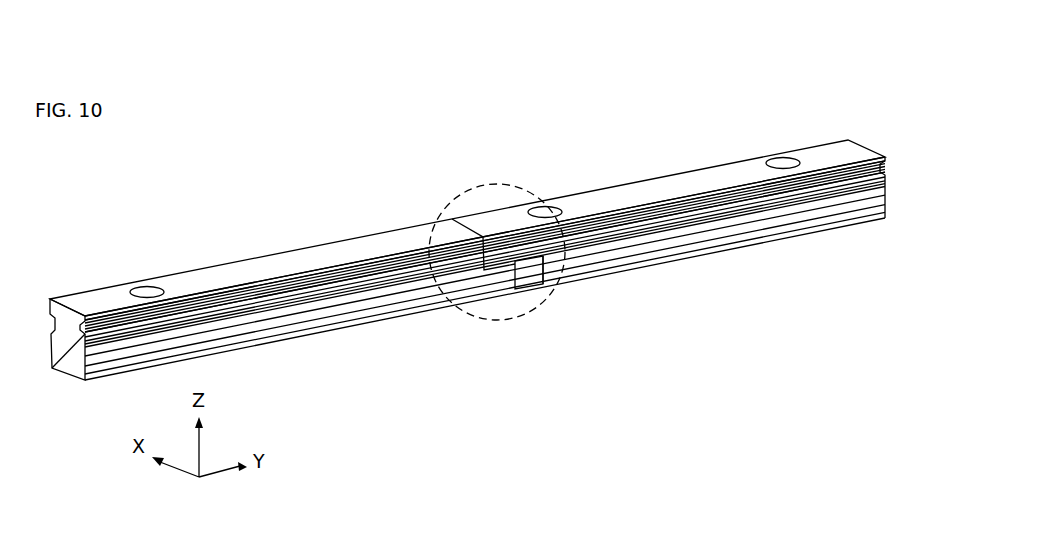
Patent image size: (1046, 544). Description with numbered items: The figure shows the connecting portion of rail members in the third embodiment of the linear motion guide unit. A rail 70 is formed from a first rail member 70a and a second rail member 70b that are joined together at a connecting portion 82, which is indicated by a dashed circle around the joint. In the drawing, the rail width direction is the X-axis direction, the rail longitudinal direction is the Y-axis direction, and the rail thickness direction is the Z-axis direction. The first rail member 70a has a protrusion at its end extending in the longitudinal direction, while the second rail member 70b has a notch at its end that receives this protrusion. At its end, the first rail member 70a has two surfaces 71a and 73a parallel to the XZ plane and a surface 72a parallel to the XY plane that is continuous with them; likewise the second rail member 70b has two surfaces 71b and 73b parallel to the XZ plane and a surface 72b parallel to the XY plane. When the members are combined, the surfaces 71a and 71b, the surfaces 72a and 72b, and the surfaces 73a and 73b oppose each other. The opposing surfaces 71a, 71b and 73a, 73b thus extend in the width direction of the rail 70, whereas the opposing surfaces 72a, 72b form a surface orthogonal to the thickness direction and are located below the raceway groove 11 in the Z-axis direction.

The rail 70 is at (467, 258).
The first rail member 70a is at (279, 336).
The second rail member 70b is at (732, 244).
The surface 71a is at (497, 204).
The surface 71b is at (487, 263).
The surface 72a is at (549, 311).
The surface 72b is at (515, 264).
The surface 73a is at (598, 298).
The surface 73b is at (547, 280).
The connecting portion 82 is at (541, 262).
The raceway groove 11 is at (848, 182).